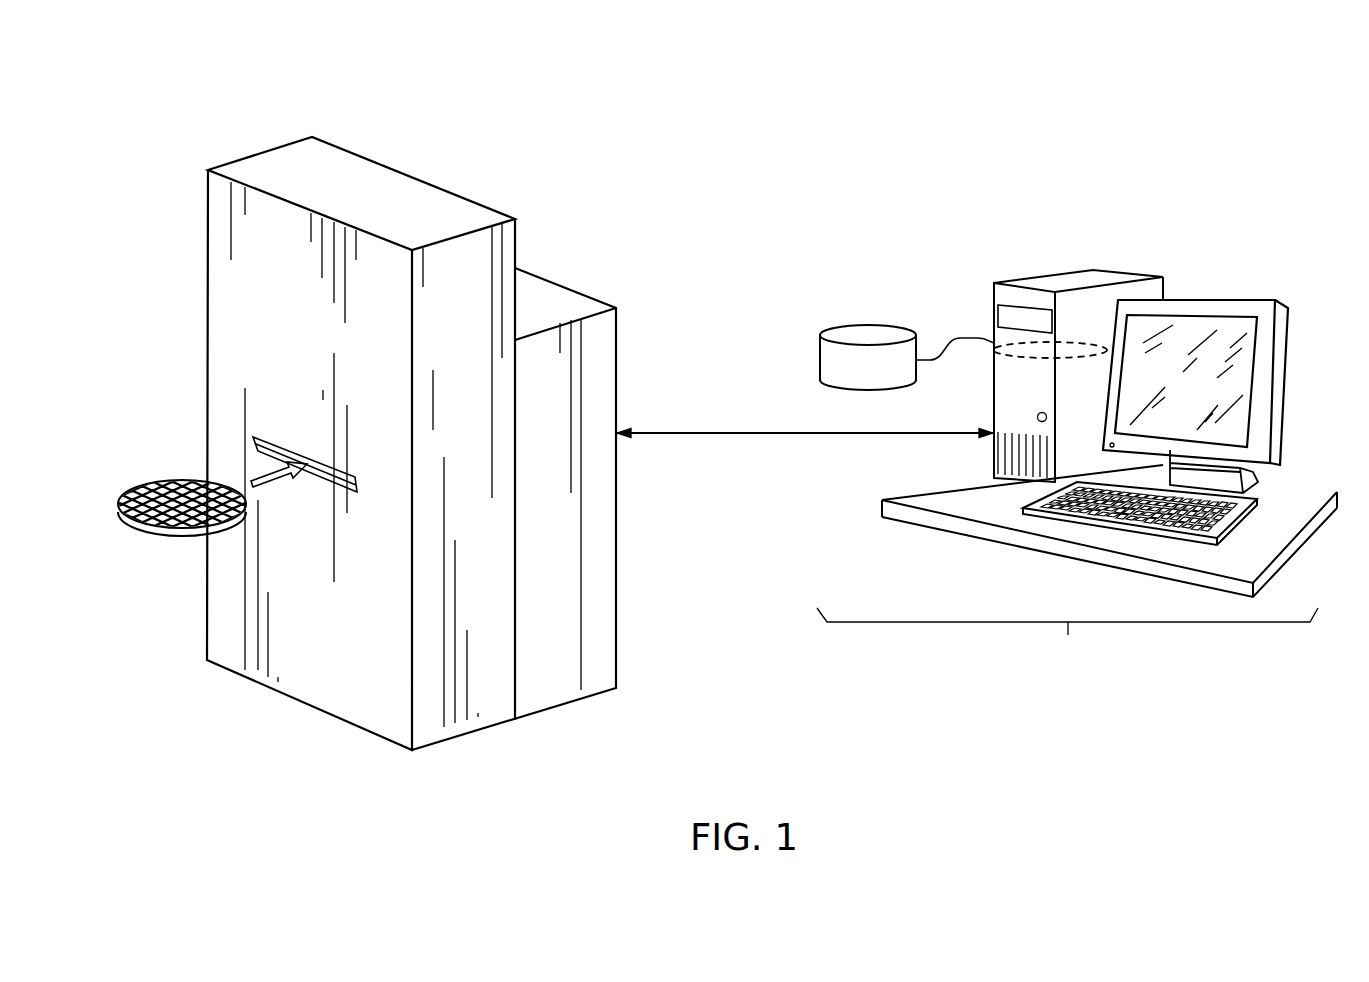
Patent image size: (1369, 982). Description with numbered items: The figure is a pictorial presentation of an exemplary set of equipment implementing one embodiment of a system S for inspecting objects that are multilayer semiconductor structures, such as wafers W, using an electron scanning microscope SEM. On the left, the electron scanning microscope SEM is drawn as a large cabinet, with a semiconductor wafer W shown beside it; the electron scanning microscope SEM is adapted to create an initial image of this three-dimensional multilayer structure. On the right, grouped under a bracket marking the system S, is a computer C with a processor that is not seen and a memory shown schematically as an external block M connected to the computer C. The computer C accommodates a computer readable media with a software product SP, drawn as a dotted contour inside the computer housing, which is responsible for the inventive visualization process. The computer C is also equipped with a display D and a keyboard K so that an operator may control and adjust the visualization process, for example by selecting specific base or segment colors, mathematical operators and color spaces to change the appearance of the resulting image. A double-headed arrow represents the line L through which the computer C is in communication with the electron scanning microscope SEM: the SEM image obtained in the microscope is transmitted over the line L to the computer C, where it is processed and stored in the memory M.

The electron scanning microscope SEM is at (259, 152).
The semiconductor wafer W is at (142, 485).
The memory M is at (870, 325).
The computer C is at (1042, 273).
The software product SP is at (1083, 335).
The display D is at (1203, 298).
The keyboard K is at (1258, 514).
The line L is at (792, 435).
The system S is at (1085, 425).